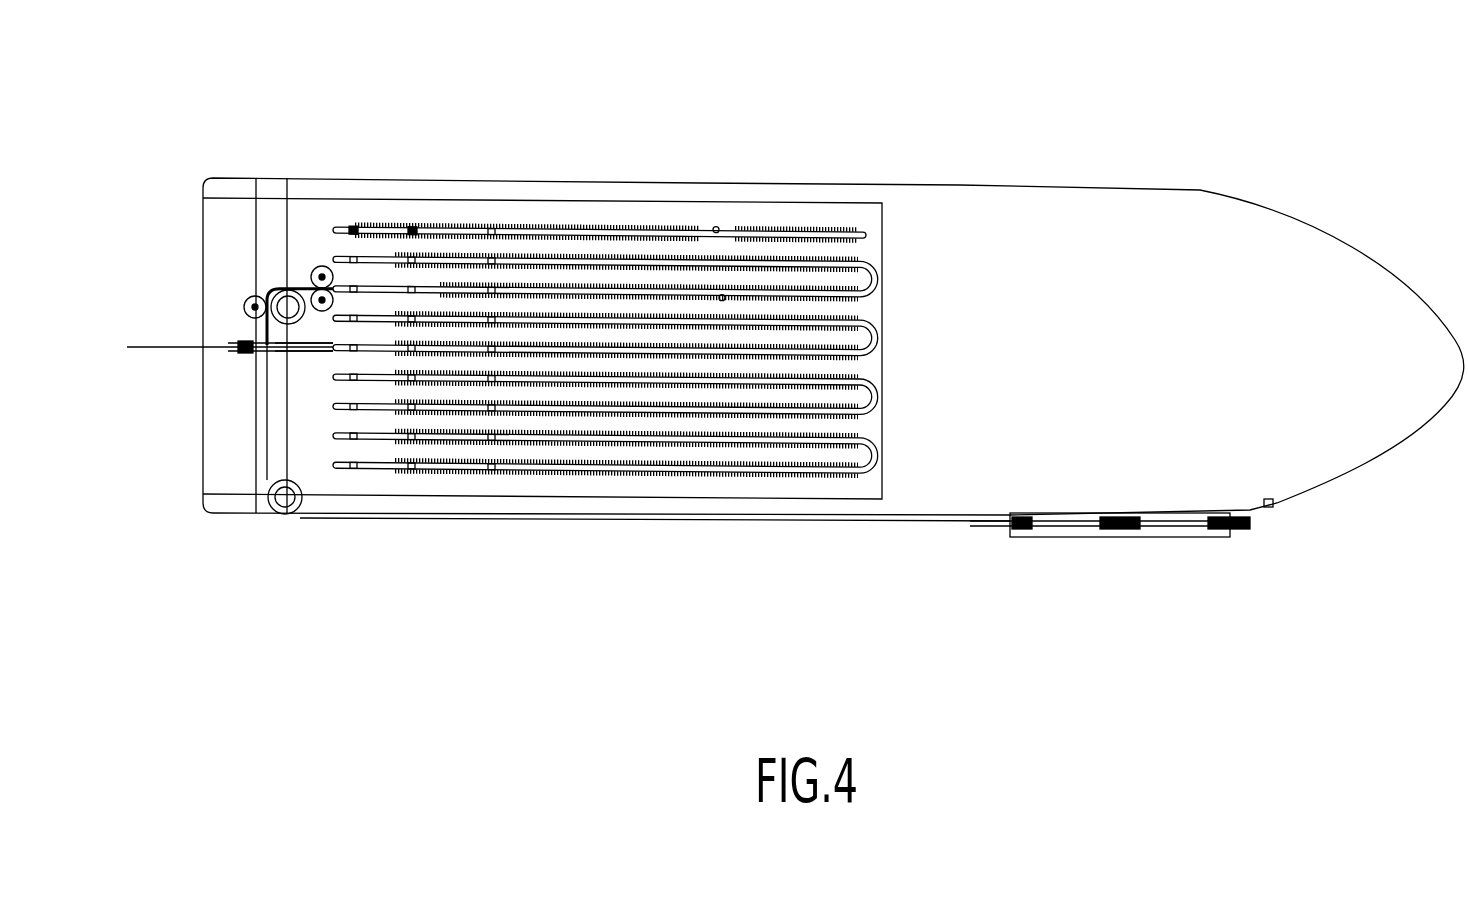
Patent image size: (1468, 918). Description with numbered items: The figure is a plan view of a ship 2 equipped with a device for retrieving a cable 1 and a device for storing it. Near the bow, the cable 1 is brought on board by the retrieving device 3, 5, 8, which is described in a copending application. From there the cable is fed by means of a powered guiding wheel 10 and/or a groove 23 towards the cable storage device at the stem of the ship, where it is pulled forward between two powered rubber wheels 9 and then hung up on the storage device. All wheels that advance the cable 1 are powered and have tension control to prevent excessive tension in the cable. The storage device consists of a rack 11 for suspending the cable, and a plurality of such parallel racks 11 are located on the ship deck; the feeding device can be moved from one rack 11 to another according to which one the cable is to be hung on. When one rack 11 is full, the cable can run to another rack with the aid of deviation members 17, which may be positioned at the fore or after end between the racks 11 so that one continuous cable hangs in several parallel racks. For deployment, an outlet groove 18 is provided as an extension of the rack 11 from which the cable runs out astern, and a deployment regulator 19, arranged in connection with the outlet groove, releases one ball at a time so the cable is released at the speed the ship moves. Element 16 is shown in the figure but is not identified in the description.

The cable 1 is at (633, 228).
The ship 2 is at (1005, 228).
The retrieving device 3 is at (1240, 537).
The retrieving device 5 is at (1105, 530).
The retrieving device 8 is at (1000, 525).
The powered rubber wheels 9 is at (322, 266).
The powered guiding wheel 10 is at (283, 515).
The rack 11 is at (375, 470).
The drive pulley with belt 16 is at (303, 283).
The deviation members 17 is at (879, 283).
The outlet groove 18 is at (305, 352).
The deployment regulator 19 is at (243, 352).
The groove 23 is at (412, 227).